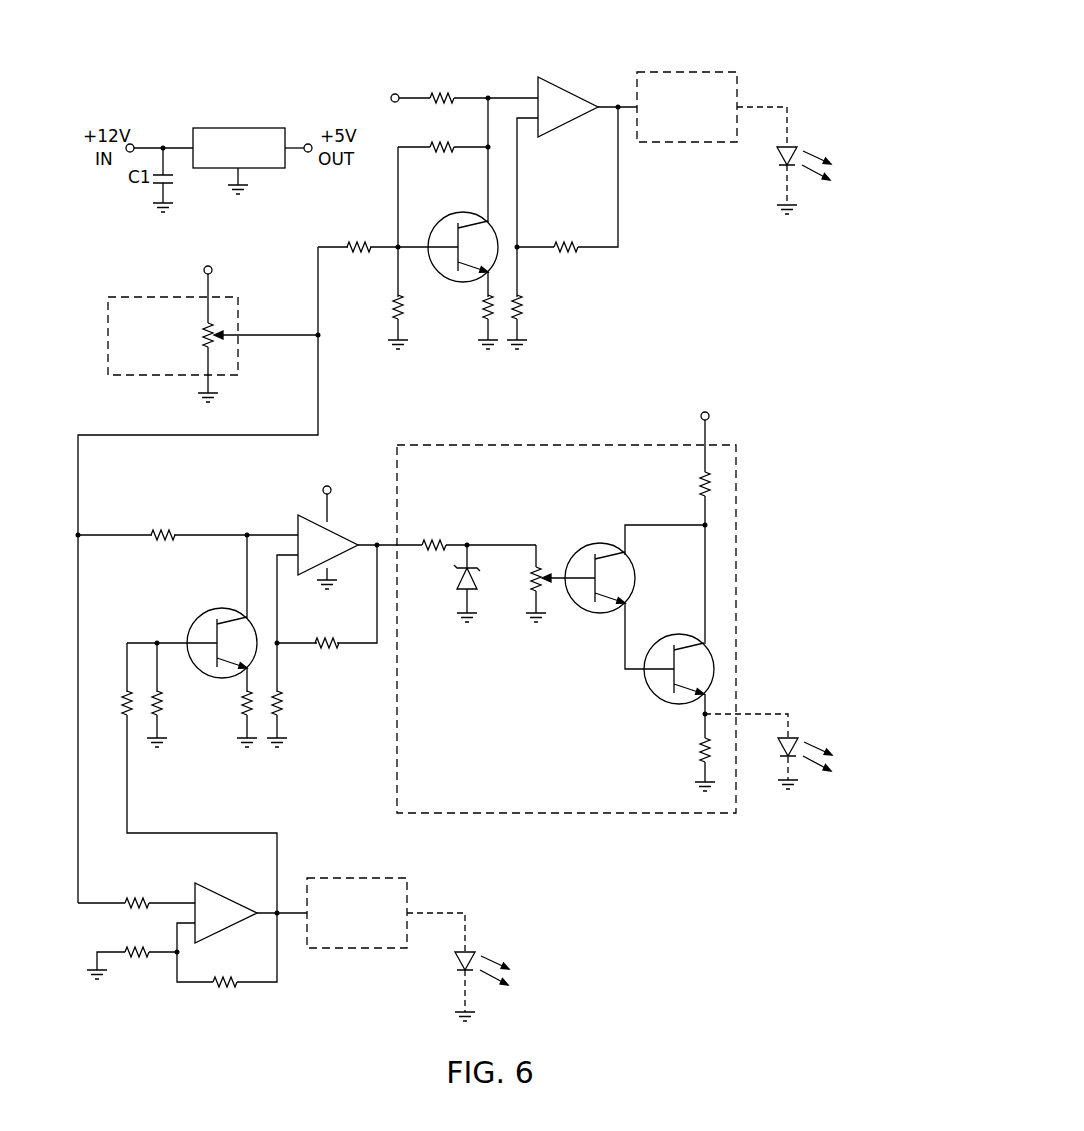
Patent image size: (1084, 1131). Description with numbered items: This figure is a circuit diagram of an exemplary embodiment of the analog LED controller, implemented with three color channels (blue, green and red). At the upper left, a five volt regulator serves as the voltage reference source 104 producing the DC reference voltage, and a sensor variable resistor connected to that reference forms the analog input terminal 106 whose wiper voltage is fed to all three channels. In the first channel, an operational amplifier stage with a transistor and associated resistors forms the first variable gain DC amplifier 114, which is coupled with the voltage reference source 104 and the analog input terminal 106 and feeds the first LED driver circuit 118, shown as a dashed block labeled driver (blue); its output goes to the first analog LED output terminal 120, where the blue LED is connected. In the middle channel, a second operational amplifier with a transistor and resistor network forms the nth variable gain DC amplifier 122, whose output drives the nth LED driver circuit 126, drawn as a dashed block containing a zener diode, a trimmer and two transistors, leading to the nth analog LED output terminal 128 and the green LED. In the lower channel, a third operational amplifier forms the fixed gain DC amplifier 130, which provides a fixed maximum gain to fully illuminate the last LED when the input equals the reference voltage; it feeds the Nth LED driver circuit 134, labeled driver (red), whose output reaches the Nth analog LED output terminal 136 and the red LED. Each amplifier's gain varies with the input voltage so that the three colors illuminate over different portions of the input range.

The voltage reference source 104 is at (230, 127).
The analog input terminal 106 is at (162, 293).
The first variable gain DC amplifier 114 is at (508, 63).
The first LED driver circuit 118 is at (688, 72).
The first analog LED output terminal 120 is at (763, 103).
The nth variable gain DC amplifier 122 is at (363, 460).
The nth LED driver circuit 126 is at (568, 441).
The nth analog LED output terminal 128 is at (765, 712).
The fixed gain DC amplifier 130 is at (297, 842).
The Nth LED driver circuit 134 is at (355, 950).
The Nth analog LED output terminal 136 is at (442, 910).